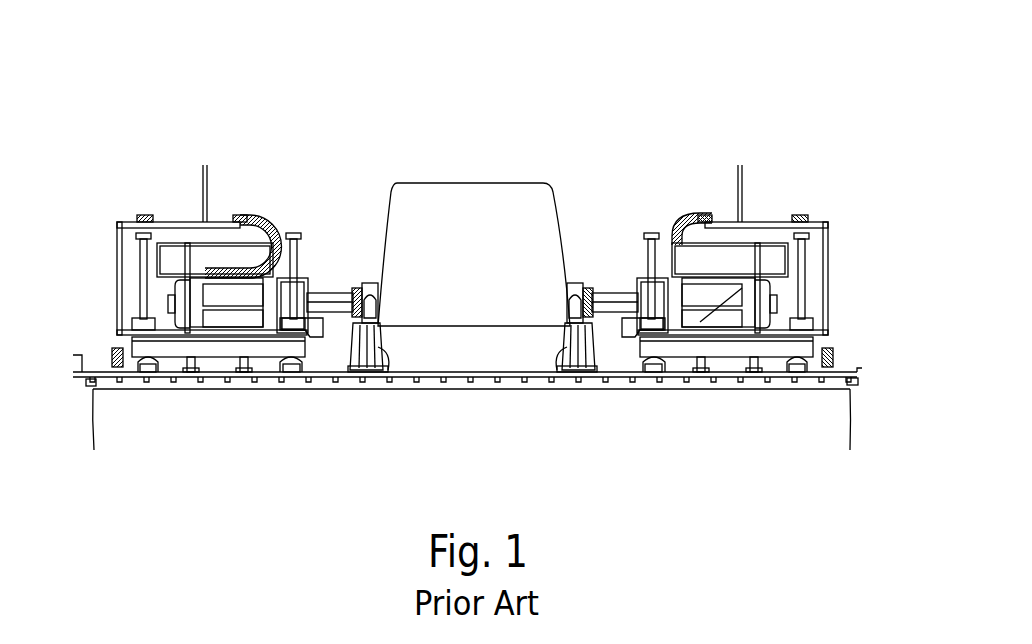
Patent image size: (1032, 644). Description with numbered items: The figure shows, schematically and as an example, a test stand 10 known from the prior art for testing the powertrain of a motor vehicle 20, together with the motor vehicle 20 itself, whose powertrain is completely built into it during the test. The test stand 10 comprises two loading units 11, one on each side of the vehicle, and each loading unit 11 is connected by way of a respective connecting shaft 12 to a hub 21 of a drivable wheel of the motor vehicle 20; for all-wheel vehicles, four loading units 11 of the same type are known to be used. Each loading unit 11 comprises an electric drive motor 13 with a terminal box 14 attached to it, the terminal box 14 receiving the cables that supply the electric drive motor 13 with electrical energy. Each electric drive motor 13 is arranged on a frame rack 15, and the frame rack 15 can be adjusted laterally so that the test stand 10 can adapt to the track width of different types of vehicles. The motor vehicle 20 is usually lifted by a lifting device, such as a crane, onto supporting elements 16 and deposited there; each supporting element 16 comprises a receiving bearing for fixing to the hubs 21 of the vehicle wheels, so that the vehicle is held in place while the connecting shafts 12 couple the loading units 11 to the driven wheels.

The test stand 10 is at (677, 128).
The loading unit 11 is at (248, 205).
The connecting shaft 12 is at (331, 296).
The electric drive motor 13 is at (217, 298).
The terminal box 14 is at (197, 263).
The frame rack 15 is at (215, 348).
The supporting element 16 is at (385, 367).
The motor vehicle 20 is at (442, 197).
The hub 21 is at (367, 290).